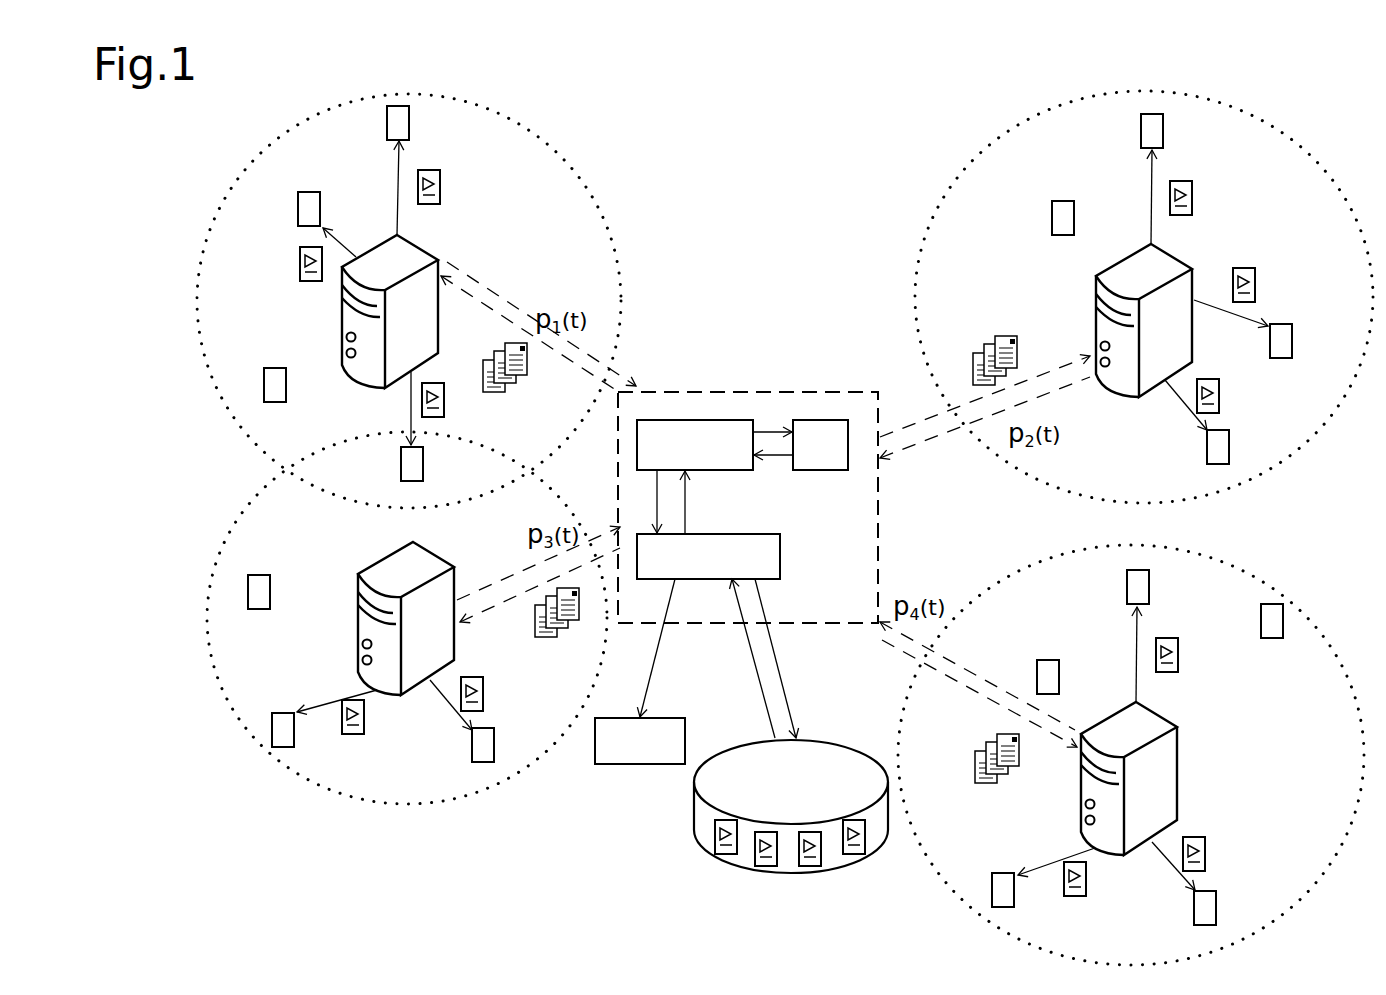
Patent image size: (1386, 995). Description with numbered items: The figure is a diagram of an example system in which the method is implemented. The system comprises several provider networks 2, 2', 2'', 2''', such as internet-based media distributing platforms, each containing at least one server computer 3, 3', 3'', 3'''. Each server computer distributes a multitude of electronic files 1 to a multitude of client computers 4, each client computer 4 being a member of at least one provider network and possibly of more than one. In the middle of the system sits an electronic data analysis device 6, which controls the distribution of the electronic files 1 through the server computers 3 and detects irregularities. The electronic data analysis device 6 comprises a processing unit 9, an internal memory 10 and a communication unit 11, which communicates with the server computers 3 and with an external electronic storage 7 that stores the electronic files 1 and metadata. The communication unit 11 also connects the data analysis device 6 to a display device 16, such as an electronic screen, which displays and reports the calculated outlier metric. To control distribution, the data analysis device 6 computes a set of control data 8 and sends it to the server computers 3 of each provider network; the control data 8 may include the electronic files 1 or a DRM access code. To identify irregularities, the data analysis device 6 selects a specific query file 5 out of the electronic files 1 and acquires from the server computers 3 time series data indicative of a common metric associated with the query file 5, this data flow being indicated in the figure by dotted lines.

The electronic files 1 is at (444, 406).
The provider network 2 is at (444, 301).
The provider network 2' is at (1144, 297).
The provider network 2'' is at (389, 618).
The provider network 2''' is at (1131, 754).
The server computer 3 is at (390, 311).
The server computer 3' is at (1144, 320).
The server computer 3'' is at (406, 618).
The server computer 3''' is at (1129, 778).
The client computer 4 is at (387, 118).
The query file 5 is at (440, 178).
The electronic data analysis device 6 is at (810, 392).
The electronic storage 7 is at (786, 795).
The control data 8 is at (490, 358).
The processing unit 9 is at (686, 460).
The internal memory 10 is at (805, 460).
The communication unit 11 is at (686, 572).
The display device 16 is at (626, 757).